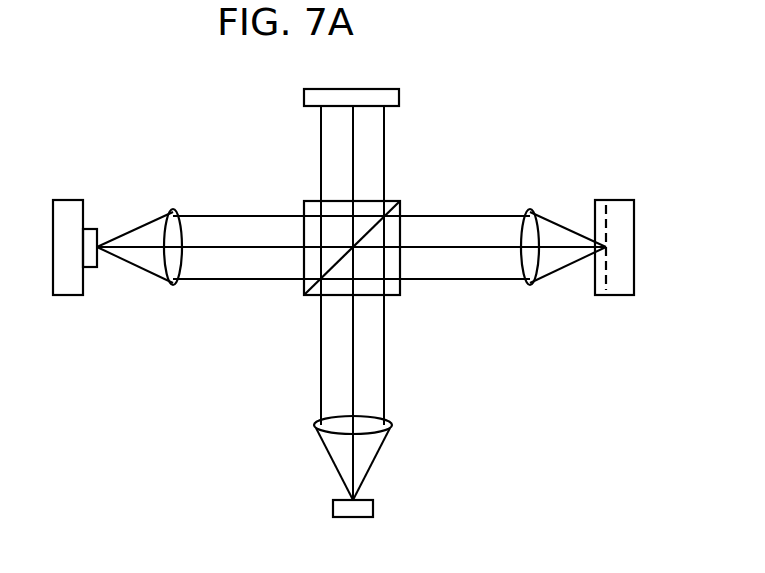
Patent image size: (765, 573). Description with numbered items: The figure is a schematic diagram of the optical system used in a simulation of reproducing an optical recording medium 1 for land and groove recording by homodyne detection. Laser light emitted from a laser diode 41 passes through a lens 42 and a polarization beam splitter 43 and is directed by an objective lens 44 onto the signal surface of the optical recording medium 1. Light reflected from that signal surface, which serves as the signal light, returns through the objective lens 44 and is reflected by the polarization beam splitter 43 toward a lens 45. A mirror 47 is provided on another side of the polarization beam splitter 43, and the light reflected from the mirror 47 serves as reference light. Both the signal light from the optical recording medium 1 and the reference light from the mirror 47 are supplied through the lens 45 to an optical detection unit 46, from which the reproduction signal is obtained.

The optical recording medium 1 is at (620, 200).
The laser diode 41 is at (68, 200).
The lens 42 is at (173, 209).
The polarization beam splitter 43 is at (316, 206).
The objective lens 44 is at (529, 209).
The lens 45 is at (316, 425).
The optical detection unit 46 is at (333, 508).
The mirror 47 is at (318, 97).